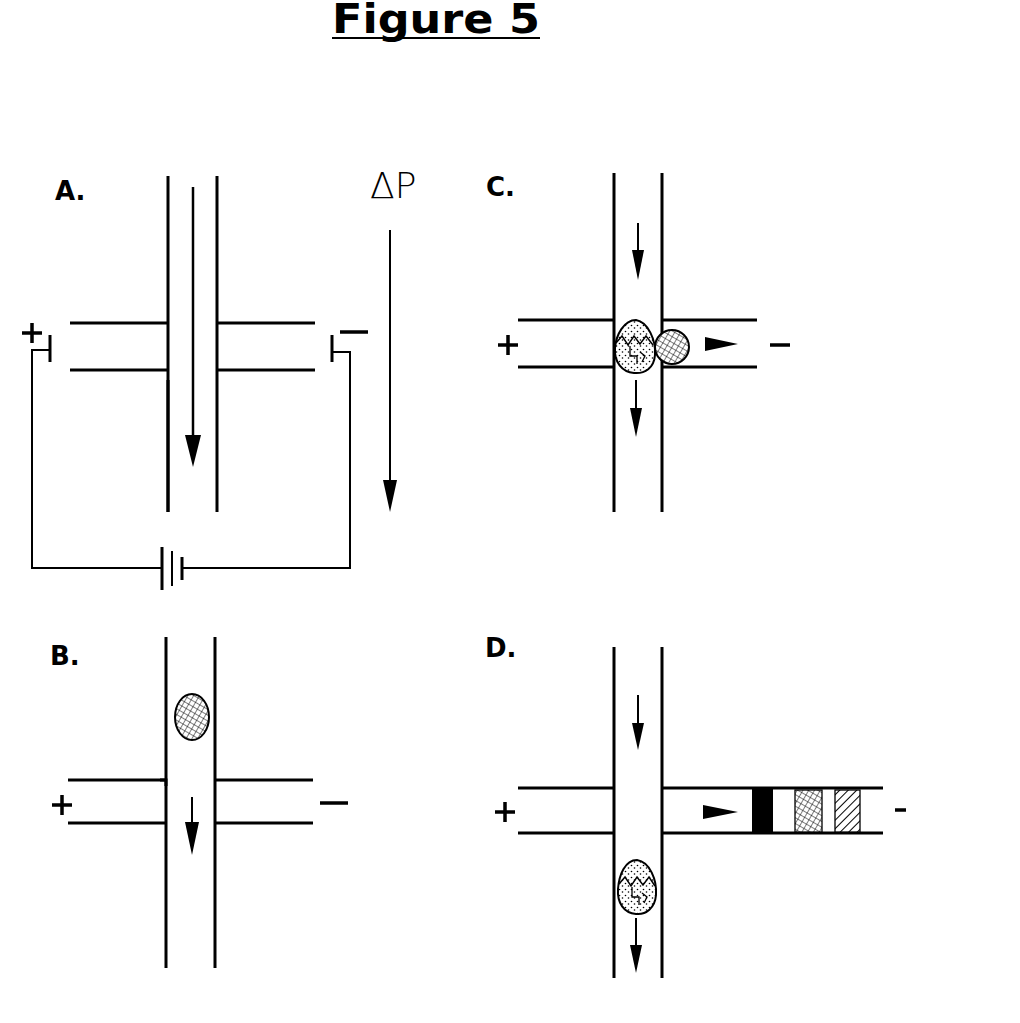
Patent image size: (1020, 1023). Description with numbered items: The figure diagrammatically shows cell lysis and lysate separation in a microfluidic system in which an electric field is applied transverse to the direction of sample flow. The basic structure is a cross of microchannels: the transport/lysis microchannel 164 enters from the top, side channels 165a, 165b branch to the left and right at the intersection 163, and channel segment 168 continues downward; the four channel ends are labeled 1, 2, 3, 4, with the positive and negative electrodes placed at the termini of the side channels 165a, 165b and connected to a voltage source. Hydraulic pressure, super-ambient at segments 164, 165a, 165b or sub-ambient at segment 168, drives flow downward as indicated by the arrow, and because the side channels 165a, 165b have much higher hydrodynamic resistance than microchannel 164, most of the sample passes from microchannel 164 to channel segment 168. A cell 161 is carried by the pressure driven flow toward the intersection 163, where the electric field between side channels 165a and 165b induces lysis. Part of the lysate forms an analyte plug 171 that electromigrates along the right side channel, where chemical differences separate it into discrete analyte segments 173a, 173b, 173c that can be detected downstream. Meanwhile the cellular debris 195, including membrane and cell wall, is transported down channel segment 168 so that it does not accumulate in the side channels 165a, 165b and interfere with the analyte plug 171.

The channel port 1 is at (237, 191).
The channel port 2 is at (79, 303).
The channel port 3 is at (297, 303).
The channel port 4 is at (237, 491).
The cell 161 is at (193, 683).
The intersection 163 is at (164, 777).
The microchannel 164 is at (220, 250).
The side channel 165a is at (136, 316).
The side channel 165b is at (270, 374).
The channel segment 168 is at (167, 476).
The analyte plug 171 is at (683, 362).
The analyte segment 173a is at (757, 840).
The analyte segment 173b is at (806, 840).
The analyte segment 173c is at (855, 838).
The cellular debris 195 is at (615, 362).